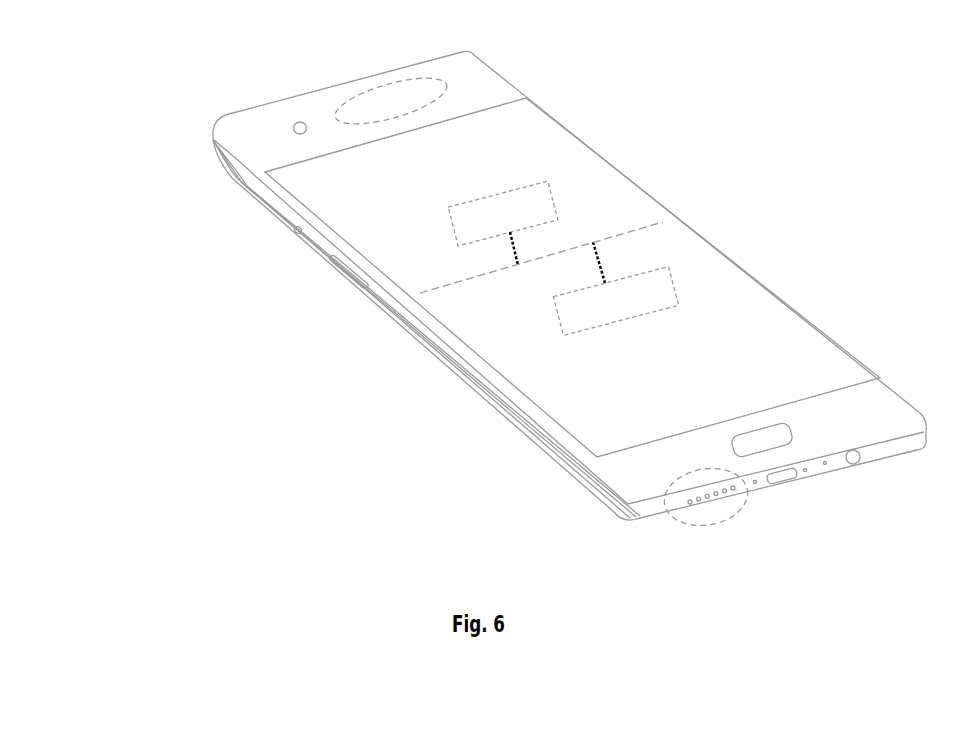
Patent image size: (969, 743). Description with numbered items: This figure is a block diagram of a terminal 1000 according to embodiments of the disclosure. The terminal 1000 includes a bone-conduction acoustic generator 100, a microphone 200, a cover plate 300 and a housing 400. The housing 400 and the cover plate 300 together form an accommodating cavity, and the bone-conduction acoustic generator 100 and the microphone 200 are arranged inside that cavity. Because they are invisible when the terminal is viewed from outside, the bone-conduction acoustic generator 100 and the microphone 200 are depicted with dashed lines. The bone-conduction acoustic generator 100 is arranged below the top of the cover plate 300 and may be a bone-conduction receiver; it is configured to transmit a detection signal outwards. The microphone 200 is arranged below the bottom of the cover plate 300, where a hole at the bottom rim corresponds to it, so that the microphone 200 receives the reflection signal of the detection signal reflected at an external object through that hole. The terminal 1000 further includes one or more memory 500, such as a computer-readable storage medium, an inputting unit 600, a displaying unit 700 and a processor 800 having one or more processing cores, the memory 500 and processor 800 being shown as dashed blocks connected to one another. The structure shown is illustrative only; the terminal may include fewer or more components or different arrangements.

The terminal 1000 is at (95, 67).
The bone-conduction acoustic generator 100 is at (372, 110).
The microphone 200 is at (725, 507).
The cover plate 300 is at (253, 148).
The housing 400 is at (500, 398).
The memory 500 is at (490, 195).
The inputting unit 600 is at (772, 440).
The displaying unit 700 is at (401, 247).
The processor 800 is at (618, 320).